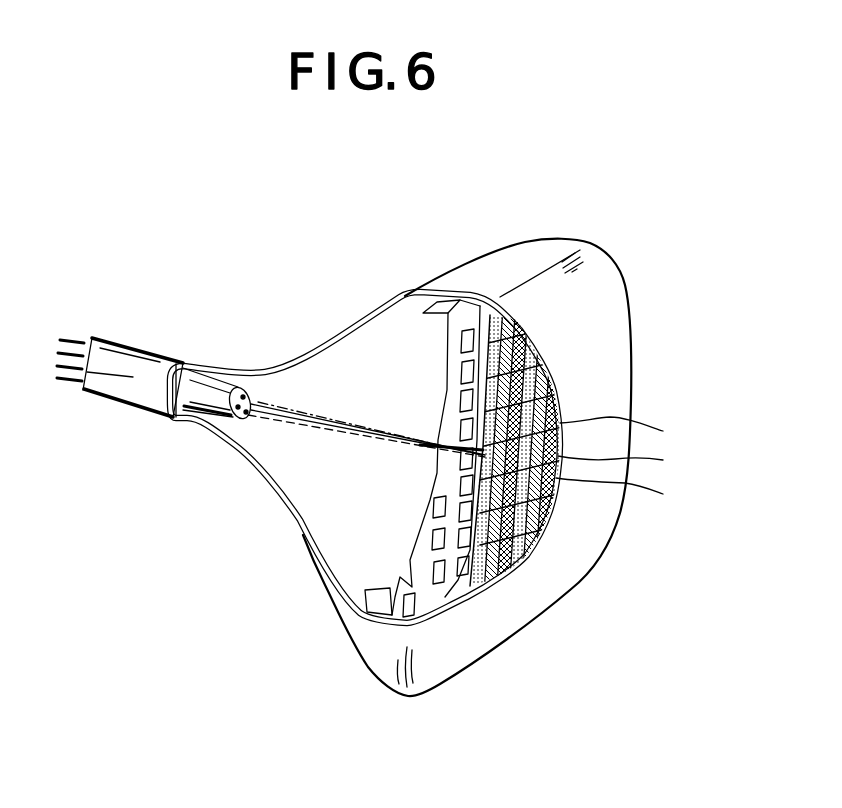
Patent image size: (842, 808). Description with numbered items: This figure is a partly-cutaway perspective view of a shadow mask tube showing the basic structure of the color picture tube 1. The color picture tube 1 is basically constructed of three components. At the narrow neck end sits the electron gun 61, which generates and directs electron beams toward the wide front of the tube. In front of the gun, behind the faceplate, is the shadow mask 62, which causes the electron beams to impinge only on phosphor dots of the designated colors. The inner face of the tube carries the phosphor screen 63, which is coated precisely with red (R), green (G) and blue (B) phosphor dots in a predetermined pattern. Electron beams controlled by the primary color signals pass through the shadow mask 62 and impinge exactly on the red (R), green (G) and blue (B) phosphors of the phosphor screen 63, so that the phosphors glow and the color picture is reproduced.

The color picture tube 1 is at (622, 262).
The electron gun 61 is at (203, 390).
The shadow mask 62 is at (448, 392).
The phosphor screen 63 is at (475, 446).
The red phosphor dots R is at (355, 440).
The green phosphor dots G is at (331, 426).
The blue phosphor dots B is at (287, 430).